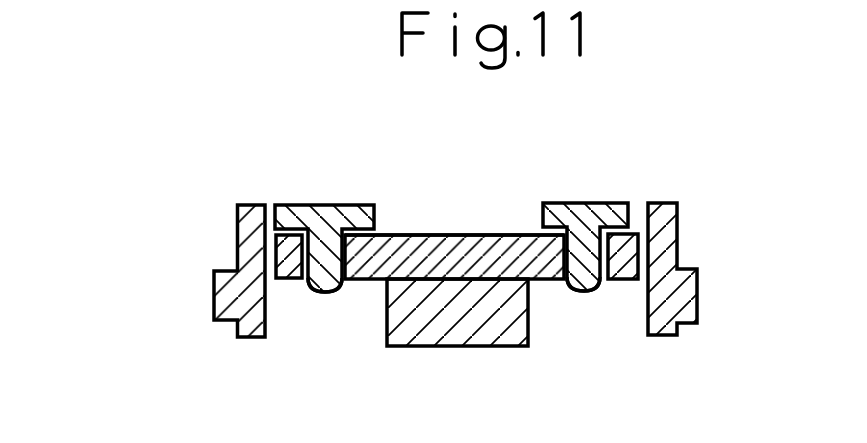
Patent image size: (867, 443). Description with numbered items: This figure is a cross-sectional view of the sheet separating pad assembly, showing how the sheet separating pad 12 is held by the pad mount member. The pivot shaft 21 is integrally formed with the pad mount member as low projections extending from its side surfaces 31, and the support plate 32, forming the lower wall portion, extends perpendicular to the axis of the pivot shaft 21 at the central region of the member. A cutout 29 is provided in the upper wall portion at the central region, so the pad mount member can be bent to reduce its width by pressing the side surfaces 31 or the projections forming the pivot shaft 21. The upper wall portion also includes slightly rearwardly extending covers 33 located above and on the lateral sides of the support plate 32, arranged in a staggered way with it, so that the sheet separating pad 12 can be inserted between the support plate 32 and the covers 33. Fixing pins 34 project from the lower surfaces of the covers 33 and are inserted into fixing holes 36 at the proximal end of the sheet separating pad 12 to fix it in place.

The sheet separating pad 12 is at (465, 250).
The pivot shaft 21 is at (452, 258).
The cutout 29 is at (400, 227).
The side surfaces 31 is at (678, 235).
The support plate 32 is at (475, 335).
The covers 33 is at (322, 204).
The fixing pins 34 is at (316, 297).
The fixing holes 36 is at (347, 282).